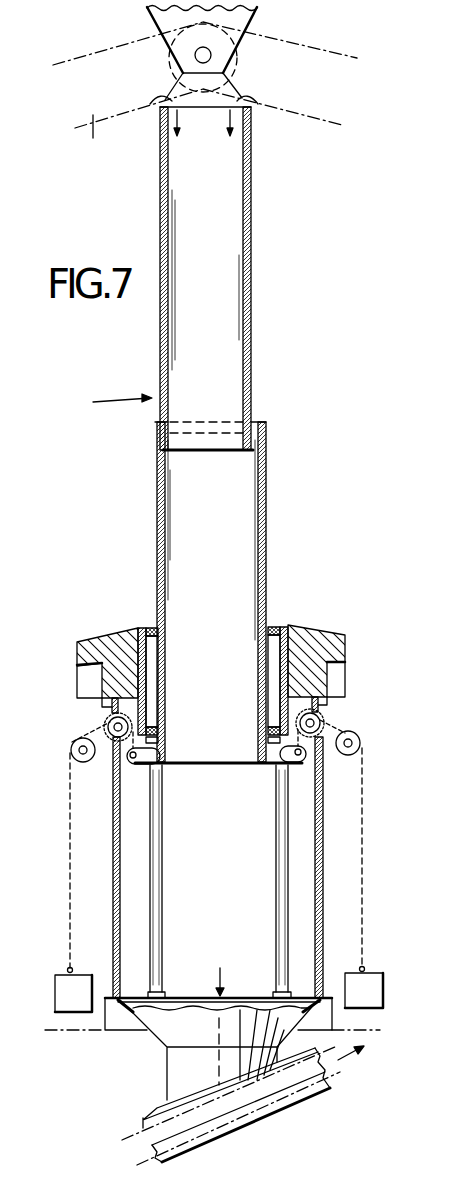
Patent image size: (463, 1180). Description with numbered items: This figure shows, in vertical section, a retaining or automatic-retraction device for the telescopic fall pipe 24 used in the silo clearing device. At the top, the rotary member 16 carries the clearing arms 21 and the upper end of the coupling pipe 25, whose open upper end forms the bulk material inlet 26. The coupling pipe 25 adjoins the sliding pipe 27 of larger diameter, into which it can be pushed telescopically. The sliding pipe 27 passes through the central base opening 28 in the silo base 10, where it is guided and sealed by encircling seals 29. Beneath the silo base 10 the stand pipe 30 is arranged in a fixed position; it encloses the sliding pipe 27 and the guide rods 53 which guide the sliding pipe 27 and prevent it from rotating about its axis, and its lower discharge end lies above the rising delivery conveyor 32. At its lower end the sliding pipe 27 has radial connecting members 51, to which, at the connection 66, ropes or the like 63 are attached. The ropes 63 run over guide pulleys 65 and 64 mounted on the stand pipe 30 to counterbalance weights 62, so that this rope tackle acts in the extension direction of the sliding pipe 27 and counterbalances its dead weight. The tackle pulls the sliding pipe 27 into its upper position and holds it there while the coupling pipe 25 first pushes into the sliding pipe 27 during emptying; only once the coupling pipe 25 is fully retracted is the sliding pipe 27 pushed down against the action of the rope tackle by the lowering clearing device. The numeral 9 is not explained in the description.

The rotary member 16 is at (148, 18).
The clearing arms 21 is at (97, 144).
The bulk material inlet 26 is at (207, 103).
The coupling pipe 25 is at (232, 300).
The telescopic fall pipe 24 is at (112, 405).
The sliding pipe 27 is at (252, 523).
The encircling seals 29 is at (272, 627).
The silo base 10 is at (105, 640).
The base opening 28 is at (277, 655).
The guide pulleys 65 is at (112, 720).
The guide pulleys 64 is at (72, 752).
The connection point 66 is at (127, 758).
The connecting members 51 is at (138, 765).
The ropes 63 is at (70, 852).
The stand pipe 30 is at (115, 887).
The guide rods 53 is at (158, 882).
The counterbalance weights 62 is at (60, 998).
The delivery conveyor 32 is at (233, 1122).
The frame 9 is at (7, 780).